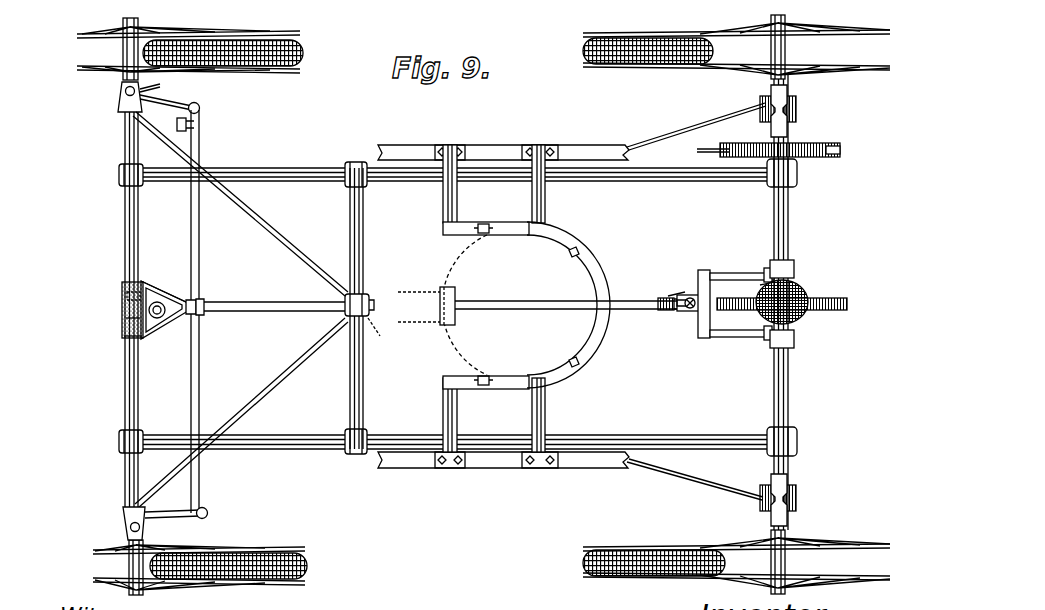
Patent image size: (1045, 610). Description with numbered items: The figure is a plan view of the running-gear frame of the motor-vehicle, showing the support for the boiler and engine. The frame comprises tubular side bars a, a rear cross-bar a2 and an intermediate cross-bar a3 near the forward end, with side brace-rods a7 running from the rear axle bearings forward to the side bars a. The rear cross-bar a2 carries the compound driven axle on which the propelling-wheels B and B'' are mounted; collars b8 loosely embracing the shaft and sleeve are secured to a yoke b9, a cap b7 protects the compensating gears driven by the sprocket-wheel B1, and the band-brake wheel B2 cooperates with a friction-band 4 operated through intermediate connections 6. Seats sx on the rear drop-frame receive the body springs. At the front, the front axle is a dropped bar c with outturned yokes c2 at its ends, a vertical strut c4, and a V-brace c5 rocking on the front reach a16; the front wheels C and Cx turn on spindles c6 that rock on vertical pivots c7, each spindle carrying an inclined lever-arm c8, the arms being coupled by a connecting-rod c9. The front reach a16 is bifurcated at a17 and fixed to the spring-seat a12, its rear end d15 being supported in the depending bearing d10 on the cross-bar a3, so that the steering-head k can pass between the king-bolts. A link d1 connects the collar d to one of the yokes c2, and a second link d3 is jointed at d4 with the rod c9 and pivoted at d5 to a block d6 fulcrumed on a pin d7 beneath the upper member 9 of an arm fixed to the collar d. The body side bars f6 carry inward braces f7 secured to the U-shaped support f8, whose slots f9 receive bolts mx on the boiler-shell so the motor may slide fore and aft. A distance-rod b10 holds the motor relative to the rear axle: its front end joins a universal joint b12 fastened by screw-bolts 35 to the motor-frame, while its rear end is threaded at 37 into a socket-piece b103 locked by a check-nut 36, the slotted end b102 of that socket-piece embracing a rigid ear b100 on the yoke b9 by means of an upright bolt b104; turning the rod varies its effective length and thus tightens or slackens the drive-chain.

The side bars a is at (318, 181).
The rear cross-bar a2 is at (790, 381).
The intermediate cross-bar a3 is at (365, 378).
The side brace-rods a7 is at (677, 127).
The spring-seat a12 is at (124, 290).
The front reach a16 is at (276, 312).
The bifurcation of front reach a17 is at (152, 285).
The front axle c is at (125, 145).
The vertical outturned yokes c2 is at (120, 106).
The vertical strut c4 is at (124, 318).
The V-brace c5 is at (262, 225).
The spindles c6 is at (150, 86).
The vertical pivots c7 is at (122, 91).
The lever-arm c8 is at (198, 103).
The connecting-rod c9 is at (173, 516).
The front wheel Cx is at (266, 41).
The front wheel C is at (300, 554).
The propelling-wheel B'' is at (736, 40).
The propelling-wheel B is at (736, 557).
The sprocket-wheel B1 is at (848, 299).
The band-brake wheel B2 is at (807, 143).
The collar d is at (160, 301).
The link d1 is at (124, 300).
The second link d3 is at (188, 196).
The joint d4 is at (177, 124).
The pivot d5 is at (192, 299).
The block d6 is at (203, 304).
The pin d7 is at (211, 312).
The depending bearing d10 is at (368, 299).
The rear end of front reach d15 is at (385, 337).
The steering-head k is at (124, 332).
The upper member of arm 9 is at (171, 325).
The side bars of body f6 is at (492, 146).
The braces f7 is at (532, 190).
The support f8 is at (554, 233).
The slots f9 is at (492, 226).
The bolts mx is at (488, 227).
The screw-bolts 35 is at (478, 243).
The distance-rod b10 is at (628, 311).
The ball-and-socket joint b12 is at (456, 319).
The socket-piece b103 is at (660, 302).
The screw-thread 37 is at (670, 300).
The check-nut 36 is at (684, 313).
The slotted end b102 is at (693, 311).
The upright bolt b104 is at (694, 292).
The yoke b9 is at (700, 272).
The cap b7 is at (762, 290).
The rigid ear b100 is at (760, 298).
The collars b8 is at (794, 268).
The spring seats sx is at (771, 97).
The intermediate connections 6 is at (705, 149).
The friction-band 4 is at (835, 150).